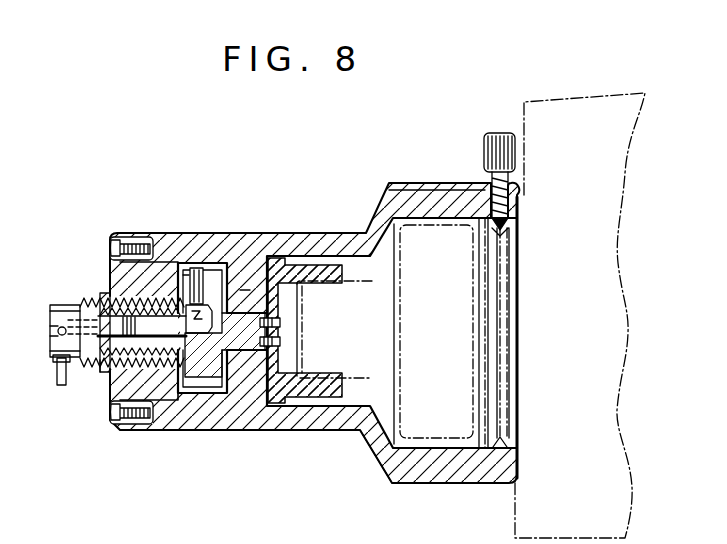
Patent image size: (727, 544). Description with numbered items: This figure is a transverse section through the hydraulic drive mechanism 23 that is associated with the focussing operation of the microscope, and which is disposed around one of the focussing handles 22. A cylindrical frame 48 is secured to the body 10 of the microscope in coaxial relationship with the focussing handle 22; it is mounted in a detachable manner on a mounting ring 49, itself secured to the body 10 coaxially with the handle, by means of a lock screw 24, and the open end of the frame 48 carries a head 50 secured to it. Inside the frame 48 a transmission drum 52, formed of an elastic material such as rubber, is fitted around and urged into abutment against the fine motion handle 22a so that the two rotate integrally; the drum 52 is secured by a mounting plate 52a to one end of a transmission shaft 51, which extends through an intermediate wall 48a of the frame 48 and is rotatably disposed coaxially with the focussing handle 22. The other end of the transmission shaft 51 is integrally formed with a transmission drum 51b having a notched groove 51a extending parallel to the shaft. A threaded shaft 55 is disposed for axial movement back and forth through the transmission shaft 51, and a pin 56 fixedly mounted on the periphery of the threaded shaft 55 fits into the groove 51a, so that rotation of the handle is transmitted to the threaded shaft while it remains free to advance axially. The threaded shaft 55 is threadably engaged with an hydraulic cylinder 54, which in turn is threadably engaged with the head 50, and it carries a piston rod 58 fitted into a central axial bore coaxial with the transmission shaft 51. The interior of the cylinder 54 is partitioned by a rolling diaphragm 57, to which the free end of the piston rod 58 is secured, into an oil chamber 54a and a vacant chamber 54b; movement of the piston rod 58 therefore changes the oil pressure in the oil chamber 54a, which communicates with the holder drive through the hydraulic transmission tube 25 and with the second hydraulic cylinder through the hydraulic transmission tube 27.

The body of the microscope 10 is at (626, 176).
The focussing handle 22 is at (428, 233).
The fine motion handle 22a is at (362, 280).
The hydraulic drive mechanism 23 is at (336, 445).
The lock screw 24 is at (497, 133).
The hydraulic transmission tube 25 is at (66, 317).
The hydraulic transmission tube 27 is at (56, 372).
The cylindrical frame 48 is at (442, 477).
The intermediate wall 48a is at (257, 280).
The mounting ring 49 is at (503, 420).
The head 50 is at (117, 258).
The transmission shaft 51 is at (240, 350).
The notched groove 51a is at (185, 280).
The transmission drum 51b is at (245, 290).
The transmission drum 52 is at (304, 280).
The mounting plate 52a is at (277, 367).
The hydraulic cylinder 54 is at (110, 362).
The oil chamber 54a is at (72, 318).
The vacant chamber 54b is at (118, 262).
The threaded shaft 55 is at (193, 393).
The pin 56 is at (193, 283).
The rolling diaphragm 57 is at (105, 360).
The piston rod 58 is at (150, 330).